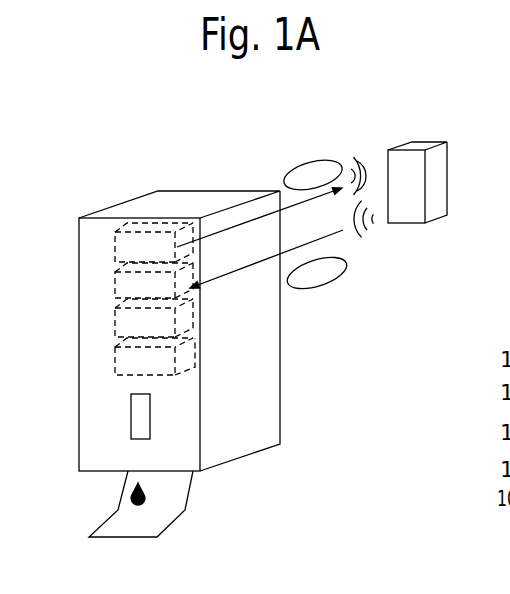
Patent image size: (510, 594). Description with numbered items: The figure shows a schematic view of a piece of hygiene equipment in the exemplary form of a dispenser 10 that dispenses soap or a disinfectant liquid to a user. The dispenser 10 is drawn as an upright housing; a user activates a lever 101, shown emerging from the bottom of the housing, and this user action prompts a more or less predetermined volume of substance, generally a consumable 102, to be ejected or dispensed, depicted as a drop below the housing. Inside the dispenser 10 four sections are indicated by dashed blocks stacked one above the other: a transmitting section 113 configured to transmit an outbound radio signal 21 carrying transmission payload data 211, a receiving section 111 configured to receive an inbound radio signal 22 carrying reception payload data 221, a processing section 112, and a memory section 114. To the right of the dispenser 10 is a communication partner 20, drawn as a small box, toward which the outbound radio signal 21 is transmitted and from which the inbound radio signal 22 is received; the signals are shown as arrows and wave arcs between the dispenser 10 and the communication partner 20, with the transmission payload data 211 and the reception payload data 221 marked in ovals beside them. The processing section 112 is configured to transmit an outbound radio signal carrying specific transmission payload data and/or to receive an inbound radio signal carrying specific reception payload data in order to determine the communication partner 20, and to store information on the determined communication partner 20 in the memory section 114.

The dispenser 10 is at (80, 423).
The lever 101 is at (173, 520).
The consumable 102 is at (128, 496).
The receiving section 111 is at (113, 284).
The processing section 112 is at (113, 324).
The transmitting section 113 is at (113, 246).
The memory section 114 is at (113, 359).
The communication partner 20 is at (437, 141).
The outbound radio signal 21 is at (377, 155).
The inbound radio signal 22 is at (385, 240).
The transmission payload data (TxPD) 211 is at (288, 170).
The reception payload data (RxPD) 221 is at (317, 288).